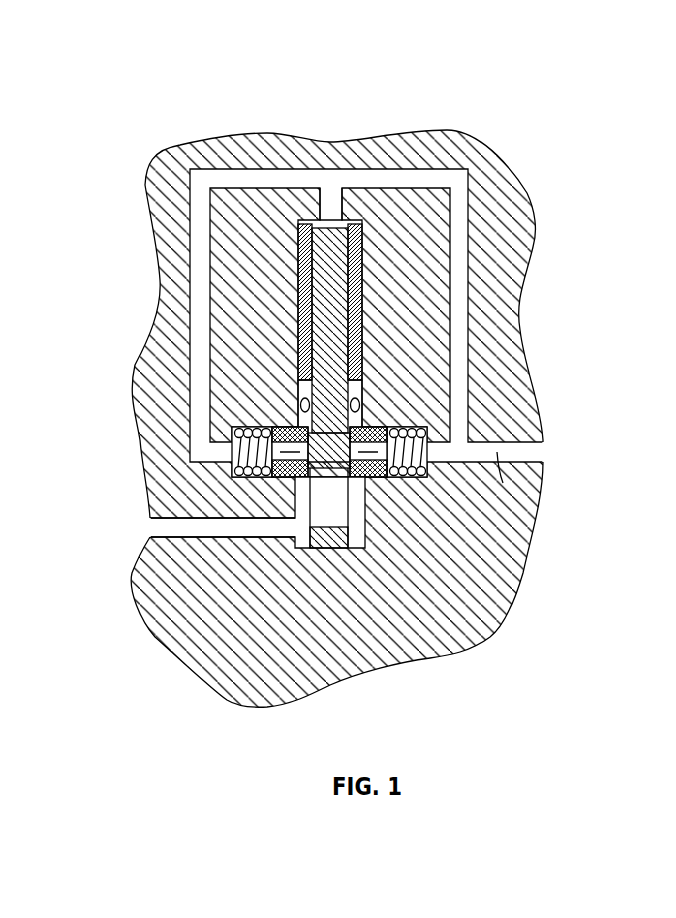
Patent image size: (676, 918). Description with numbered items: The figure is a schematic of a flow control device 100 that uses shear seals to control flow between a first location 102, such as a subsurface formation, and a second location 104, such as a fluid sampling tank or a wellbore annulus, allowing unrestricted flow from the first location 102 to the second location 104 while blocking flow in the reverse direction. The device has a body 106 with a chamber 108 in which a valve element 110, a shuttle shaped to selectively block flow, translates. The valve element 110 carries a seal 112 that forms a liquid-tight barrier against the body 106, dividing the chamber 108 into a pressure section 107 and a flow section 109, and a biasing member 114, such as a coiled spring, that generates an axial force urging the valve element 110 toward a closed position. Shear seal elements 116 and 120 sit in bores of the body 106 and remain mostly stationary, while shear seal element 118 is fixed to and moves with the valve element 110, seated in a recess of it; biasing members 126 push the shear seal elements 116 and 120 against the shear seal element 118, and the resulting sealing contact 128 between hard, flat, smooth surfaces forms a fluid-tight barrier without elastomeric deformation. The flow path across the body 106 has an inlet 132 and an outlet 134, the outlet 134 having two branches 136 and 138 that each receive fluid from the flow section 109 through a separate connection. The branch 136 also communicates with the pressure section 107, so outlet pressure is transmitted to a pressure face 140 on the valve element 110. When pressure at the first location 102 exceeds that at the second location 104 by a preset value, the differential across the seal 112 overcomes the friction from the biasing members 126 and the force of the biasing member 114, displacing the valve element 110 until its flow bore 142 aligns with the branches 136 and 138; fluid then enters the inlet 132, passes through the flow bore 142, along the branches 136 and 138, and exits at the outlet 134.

The flow control device 100 is at (537, 100).
The first location 102 is at (146, 527).
The second location 104 is at (550, 453).
The body 106 is at (522, 231).
The pressure section 107 is at (352, 222).
The chamber 108 is at (362, 292).
The flow section 109 is at (455, 560).
The valve element 110 is at (298, 388).
The seal 112 is at (298, 403).
The biasing member 114 is at (298, 297).
The shear seal element 116 is at (287, 470).
The shear seal element 118 is at (367, 550).
The shear seal element 120 is at (378, 427).
The biasing members 126 is at (232, 430).
The sealing contact 128 is at (275, 453).
The inlet 132 is at (150, 538).
The outlet 134 is at (549, 464).
The branch 136 is at (248, 178).
The branch 138 is at (357, 498).
The pressure face 140 is at (300, 335).
The flow bore 142 is at (430, 530).